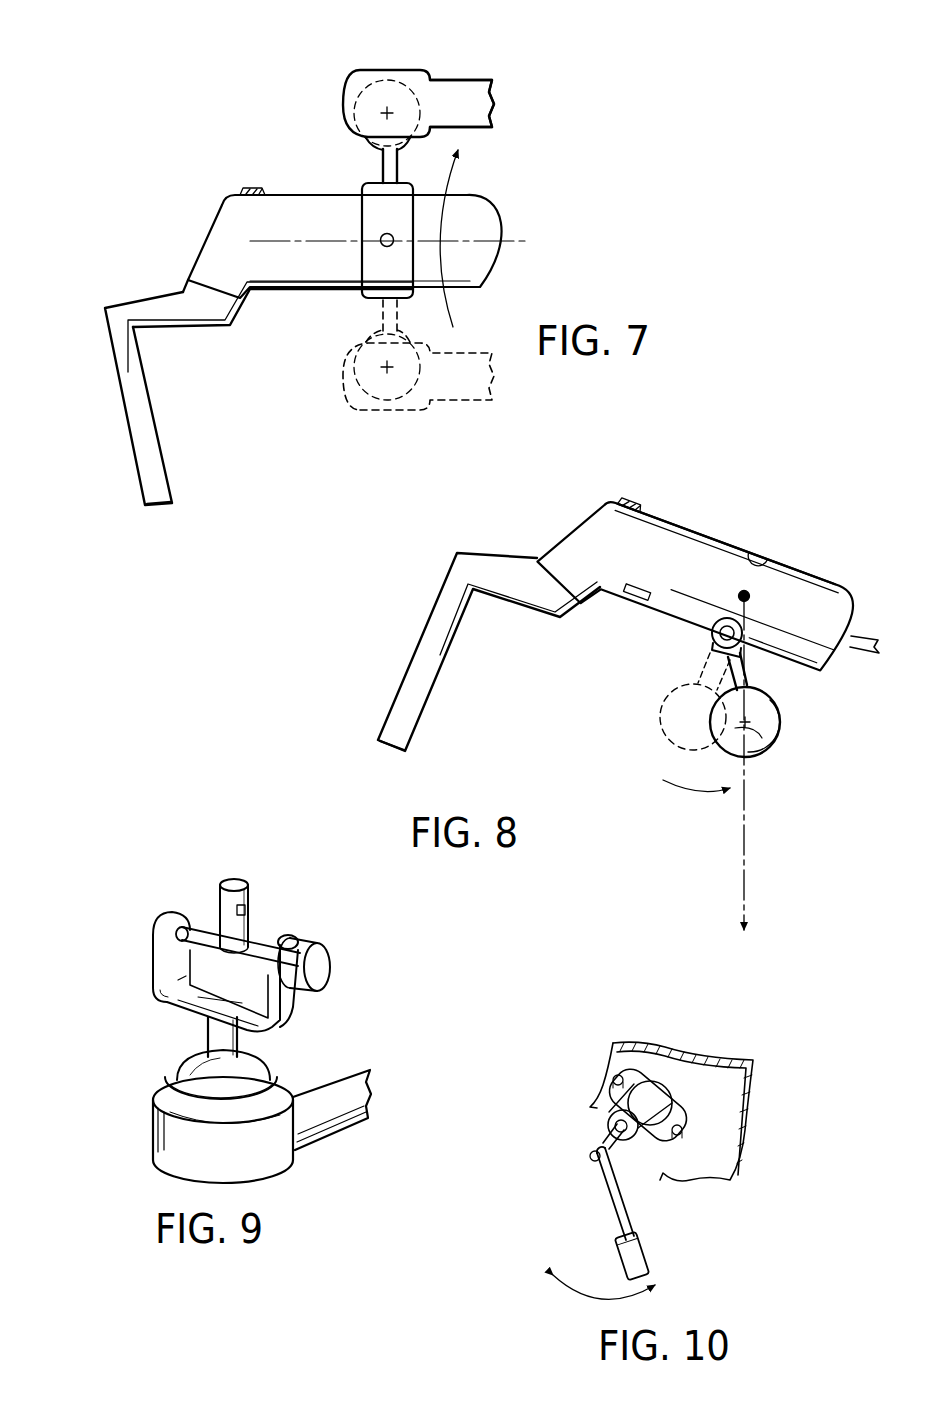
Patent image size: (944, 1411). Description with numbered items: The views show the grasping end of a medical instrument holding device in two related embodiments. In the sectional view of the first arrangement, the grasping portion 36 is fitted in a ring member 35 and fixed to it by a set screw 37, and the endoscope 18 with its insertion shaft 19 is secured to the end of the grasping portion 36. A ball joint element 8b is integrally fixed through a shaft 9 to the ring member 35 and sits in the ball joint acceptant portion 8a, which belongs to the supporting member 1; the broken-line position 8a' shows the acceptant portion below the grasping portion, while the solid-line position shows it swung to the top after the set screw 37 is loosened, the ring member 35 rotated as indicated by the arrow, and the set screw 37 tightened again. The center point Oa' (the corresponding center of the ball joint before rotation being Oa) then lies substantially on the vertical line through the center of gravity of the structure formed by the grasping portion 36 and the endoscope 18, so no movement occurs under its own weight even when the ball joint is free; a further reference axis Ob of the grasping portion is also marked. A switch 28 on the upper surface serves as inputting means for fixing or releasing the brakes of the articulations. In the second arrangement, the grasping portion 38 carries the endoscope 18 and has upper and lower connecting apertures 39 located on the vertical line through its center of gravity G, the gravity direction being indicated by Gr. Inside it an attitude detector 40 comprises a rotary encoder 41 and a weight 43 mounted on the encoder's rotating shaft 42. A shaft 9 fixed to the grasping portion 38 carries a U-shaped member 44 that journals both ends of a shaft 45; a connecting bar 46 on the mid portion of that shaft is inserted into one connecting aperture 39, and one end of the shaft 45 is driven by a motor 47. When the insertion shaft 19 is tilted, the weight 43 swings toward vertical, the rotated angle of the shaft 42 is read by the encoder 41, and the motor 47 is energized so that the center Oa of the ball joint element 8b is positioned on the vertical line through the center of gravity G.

In FIG. 7, the hose 1 is at (479, 61).
In FIG. 9, the hose 1 is at (361, 1140).
In FIG. 7, the ball joint acceptant portion 8a is at (418, 79).
In FIG. 9, the ball joint acceptant portion 8a is at (195, 1130).
In FIG. 7, the hose connecting portion (rotated position) 8a' is at (402, 371).
In FIG. 7, the ball joint element 8b is at (370, 142).
In FIG. 8, the ball joint element 8b is at (777, 718).
In FIG. 9, the ball joint element 8b is at (195, 1067).
In FIG. 7, the shaft 9 is at (382, 163).
In FIG. 9, the shaft 9 is at (207, 1032).
In FIG. 7, the endoscope 18 is at (90, 435).
In FIG. 8, the endoscope 18 is at (378, 675).
In FIG. 7, the insertion shaft 19 is at (157, 458).
In FIG. 8, the insertion shaft 19 is at (412, 717).
In FIG. 7, the switch 28 is at (250, 187).
In FIG. 8, the switch 28 is at (637, 495).
In FIG. 7, the ring member 35 is at (372, 287).
In FIG. 7, the grasping portion 36 is at (280, 293).
In FIG. 7, the set screw 37 is at (393, 237).
In FIG. 8, the grasping portion 38 is at (675, 530).
In FIG. 10, the grasping portion 38 is at (722, 1072).
In FIG. 8, the connecting apertures 39 is at (762, 541).
In FIG. 8, the attitude detector 40 is at (627, 598).
In FIG. 10, the attitude detector 40 is at (560, 1072).
In FIG. 10, the rotary encoder 41 is at (653, 1095).
In FIG. 10, the rotating shaft 42 is at (610, 1131).
In FIG. 10, the weight 43 is at (630, 1193).
In FIG. 9, the U-shaped member 44 is at (293, 1003).
In FIG. 9, the shaft 45 is at (177, 935).
In FIG. 9, the connecting bar 46 is at (225, 900).
In FIG. 9, the motor 47 is at (303, 948).
In FIG. 7, the center of ball joint element Oa is at (407, 390).
In FIG. 8, the center of ball joint element Oa is at (786, 746).
In FIG. 7, the center point Oa' is at (375, 82).
In FIG. 7, the axis Ob is at (515, 238).
In FIG. 8, the center of gravity G is at (752, 593).
In FIG. 8, the gravity direction Gr is at (762, 771).